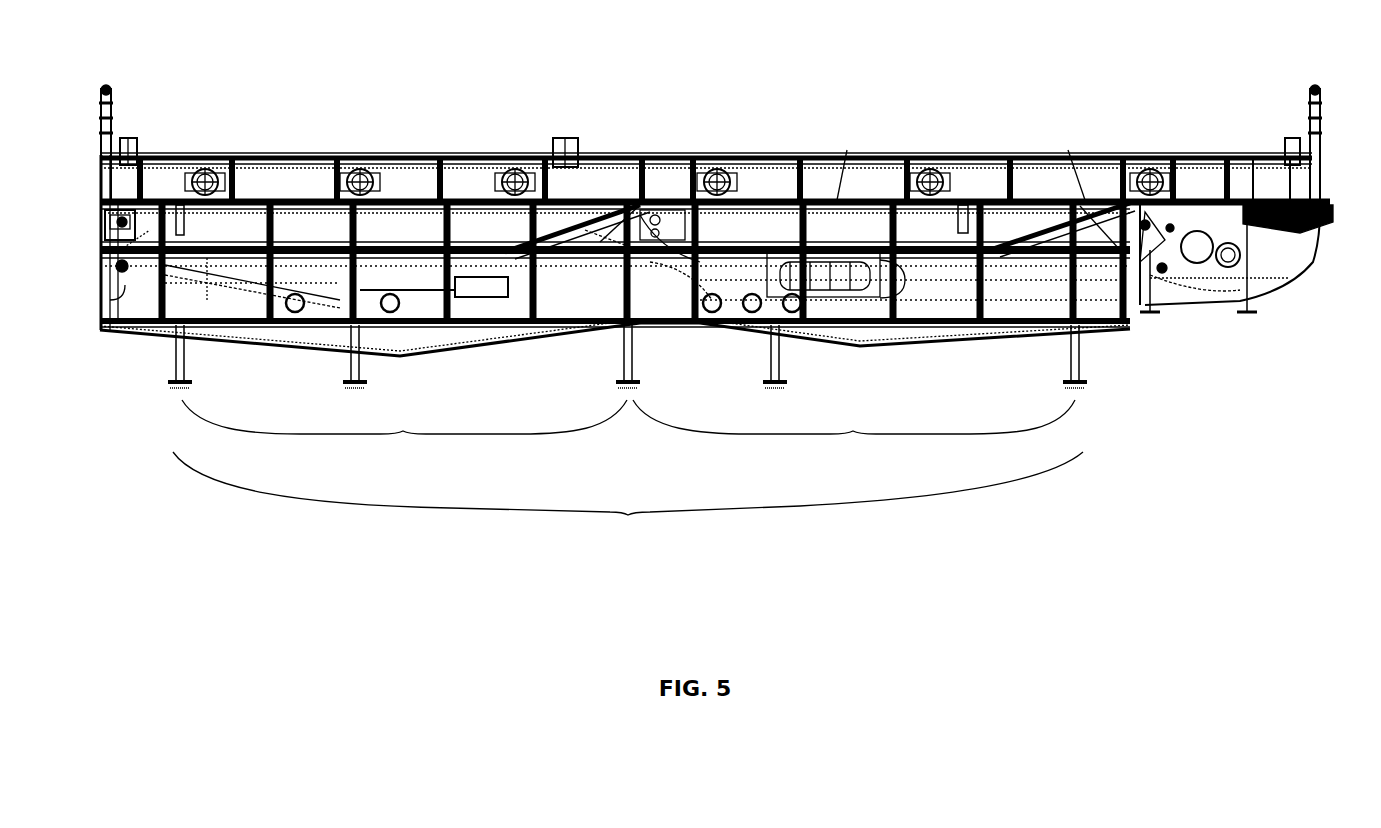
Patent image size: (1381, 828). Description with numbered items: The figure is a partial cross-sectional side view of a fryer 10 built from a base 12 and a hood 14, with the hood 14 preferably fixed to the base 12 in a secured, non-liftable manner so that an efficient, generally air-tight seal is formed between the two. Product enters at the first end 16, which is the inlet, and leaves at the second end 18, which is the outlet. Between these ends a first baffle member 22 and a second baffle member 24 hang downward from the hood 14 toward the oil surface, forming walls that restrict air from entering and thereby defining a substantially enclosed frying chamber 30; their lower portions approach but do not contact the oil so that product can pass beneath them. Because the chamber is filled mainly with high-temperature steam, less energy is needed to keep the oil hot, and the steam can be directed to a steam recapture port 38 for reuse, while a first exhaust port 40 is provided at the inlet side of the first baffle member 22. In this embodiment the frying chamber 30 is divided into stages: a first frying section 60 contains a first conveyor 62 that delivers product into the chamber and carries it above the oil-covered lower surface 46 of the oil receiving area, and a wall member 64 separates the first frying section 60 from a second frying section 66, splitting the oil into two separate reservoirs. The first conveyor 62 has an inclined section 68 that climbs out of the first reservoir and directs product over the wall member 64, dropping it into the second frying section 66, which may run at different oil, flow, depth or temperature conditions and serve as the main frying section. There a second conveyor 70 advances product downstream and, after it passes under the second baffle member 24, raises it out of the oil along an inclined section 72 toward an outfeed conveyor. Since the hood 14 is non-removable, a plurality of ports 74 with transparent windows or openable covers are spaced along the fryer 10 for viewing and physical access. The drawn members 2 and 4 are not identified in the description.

The lift connector 2 is at (1290, 137).
The lift post 4 is at (1279, 141).
The fryer 10 is at (1232, 473).
The base 12 is at (1018, 263).
The hood 14 is at (767, 155).
The first end 16 is at (100, 200).
The second end 18 is at (1318, 222).
The first baffle member 22 is at (184, 224).
The second baffle member 24 is at (974, 200).
The frying chamber 30 is at (628, 500).
The steam recapture port 38 is at (557, 137).
The first exhaust port 40 is at (127, 137).
The lower surface 46 is at (207, 258).
The first frying section 60 is at (404, 436).
The first conveyor 62 is at (140, 245).
The wall member 64 is at (606, 225).
The second frying section 66 is at (854, 436).
The inclined section 68 is at (528, 233).
The second conveyor 70 is at (742, 255).
The inclined section 72 is at (1040, 225).
The ports 74 is at (1150, 168).